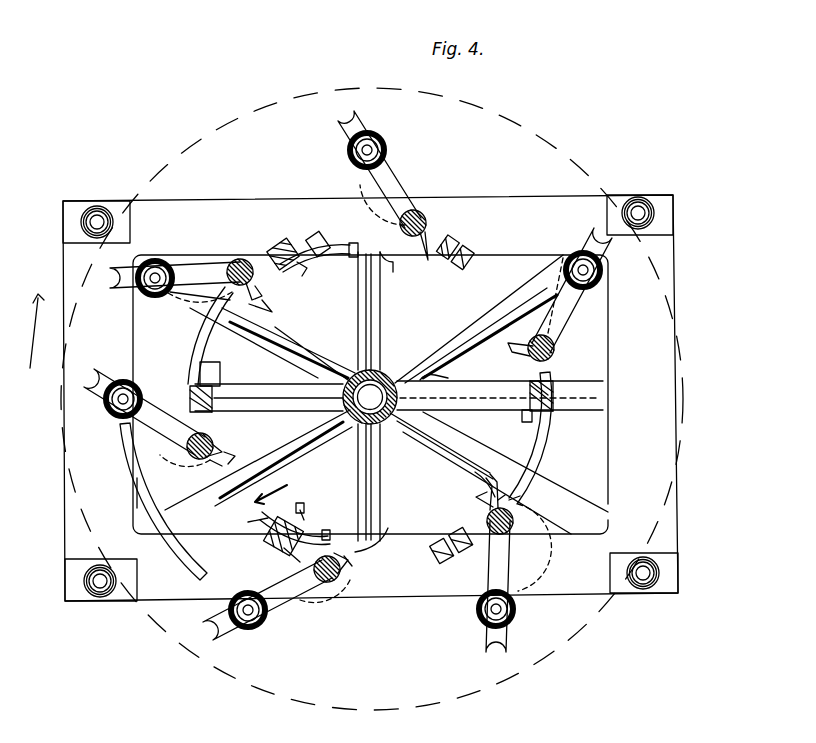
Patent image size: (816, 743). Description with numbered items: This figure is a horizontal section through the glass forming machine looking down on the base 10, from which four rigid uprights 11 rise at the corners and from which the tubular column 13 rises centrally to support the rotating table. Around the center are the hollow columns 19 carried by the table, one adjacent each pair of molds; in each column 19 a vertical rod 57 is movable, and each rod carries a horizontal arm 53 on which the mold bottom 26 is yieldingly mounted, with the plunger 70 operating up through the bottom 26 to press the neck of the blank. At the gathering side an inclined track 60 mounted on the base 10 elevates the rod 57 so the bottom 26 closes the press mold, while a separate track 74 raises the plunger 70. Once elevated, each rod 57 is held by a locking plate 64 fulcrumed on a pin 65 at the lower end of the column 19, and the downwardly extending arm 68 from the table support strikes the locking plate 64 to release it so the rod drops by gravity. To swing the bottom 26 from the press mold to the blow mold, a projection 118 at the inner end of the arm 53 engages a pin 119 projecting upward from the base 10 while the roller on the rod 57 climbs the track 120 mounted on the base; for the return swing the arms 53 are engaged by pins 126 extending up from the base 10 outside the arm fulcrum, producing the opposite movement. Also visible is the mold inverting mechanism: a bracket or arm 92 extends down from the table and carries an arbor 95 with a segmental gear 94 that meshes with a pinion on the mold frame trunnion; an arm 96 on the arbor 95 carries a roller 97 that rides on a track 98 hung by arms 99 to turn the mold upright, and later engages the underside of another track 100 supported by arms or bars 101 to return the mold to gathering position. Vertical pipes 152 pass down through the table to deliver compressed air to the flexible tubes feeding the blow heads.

The base 10 is at (510, 200).
The uprights 11 is at (98, 208).
The tubular column 13 is at (392, 378).
The column 19 is at (252, 295).
The bottom 26 is at (388, 147).
The horizontal arm 53 is at (358, 120).
The vertical rod 57 is at (240, 259).
The inclined track 60 is at (192, 356).
The locking plate 64 is at (270, 310).
The pin 65 is at (216, 462).
The arm 68 is at (274, 491).
The plunger 70 is at (150, 290).
The track 74 is at (128, 472).
The bracket or arm 92 is at (268, 542).
The segmental gear 94 is at (292, 554).
The arbor 95 is at (306, 524).
The arm 96 is at (298, 242).
The roller 97 is at (326, 244).
The track 98 is at (302, 510).
The arms 99 is at (300, 502).
The track 100 is at (342, 262).
The arms or bars 101 is at (356, 250).
The projection 118 is at (262, 276).
The pin 119 is at (504, 494).
The track 120 is at (470, 385).
The pins 126 is at (205, 300).
The vertical pipes 152 is at (236, 324).